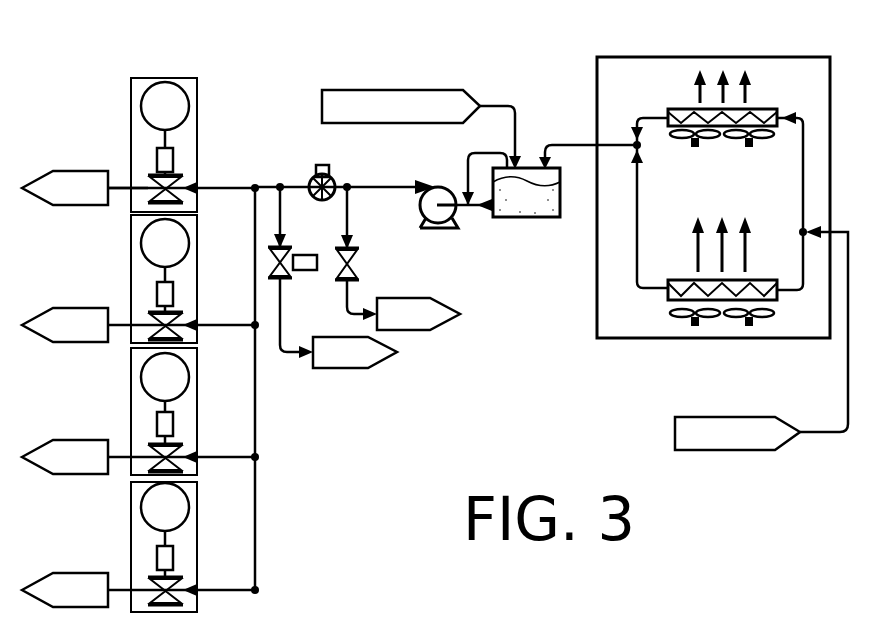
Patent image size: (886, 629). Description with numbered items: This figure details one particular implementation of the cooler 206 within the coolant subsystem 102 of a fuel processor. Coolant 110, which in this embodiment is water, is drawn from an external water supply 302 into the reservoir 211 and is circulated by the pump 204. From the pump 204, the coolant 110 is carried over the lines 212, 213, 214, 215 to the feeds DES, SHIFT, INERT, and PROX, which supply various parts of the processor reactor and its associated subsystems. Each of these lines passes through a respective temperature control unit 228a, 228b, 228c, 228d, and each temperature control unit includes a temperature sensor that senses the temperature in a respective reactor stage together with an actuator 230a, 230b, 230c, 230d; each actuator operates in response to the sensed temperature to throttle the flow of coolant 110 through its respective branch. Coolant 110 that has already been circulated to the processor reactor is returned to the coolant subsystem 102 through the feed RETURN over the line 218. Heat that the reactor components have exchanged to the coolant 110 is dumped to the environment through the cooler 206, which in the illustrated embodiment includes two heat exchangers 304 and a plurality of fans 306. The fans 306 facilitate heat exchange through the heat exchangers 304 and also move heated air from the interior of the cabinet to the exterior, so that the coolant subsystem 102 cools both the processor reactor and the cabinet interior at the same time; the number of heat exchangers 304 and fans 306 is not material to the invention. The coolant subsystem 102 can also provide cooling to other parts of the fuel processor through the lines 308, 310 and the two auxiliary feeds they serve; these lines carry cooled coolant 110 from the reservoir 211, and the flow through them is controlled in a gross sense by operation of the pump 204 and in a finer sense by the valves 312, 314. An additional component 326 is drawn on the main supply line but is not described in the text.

The coolant subsystem 102 is at (140, 35).
The coolant 110 is at (541, 206).
The pump 204 is at (442, 183).
The cooler 206 is at (595, 122).
The reservoir 211 is at (530, 213).
The line 212 is at (118, 187).
The line 213 is at (118, 324).
The line 214 is at (118, 456).
The line 215 is at (118, 589).
The line 218 is at (843, 400).
The temperature control unit 228a is at (131, 145).
The temperature control unit 228b is at (131, 280).
The temperature control unit 228c is at (131, 415).
The temperature control unit 228d is at (131, 540).
The actuator 230a is at (183, 175).
The actuator 230b is at (183, 312).
The actuator 230c is at (183, 444).
The actuator 230d is at (183, 577).
The external water supply 302 is at (322, 123).
The heat exchanger 304 is at (668, 110).
The fan 306 is at (693, 147).
The line 308 is at (285, 353).
The line 310 is at (350, 303).
The valve 312 is at (285, 270).
The valve 314 is at (352, 264).
The filter 326 is at (332, 177).